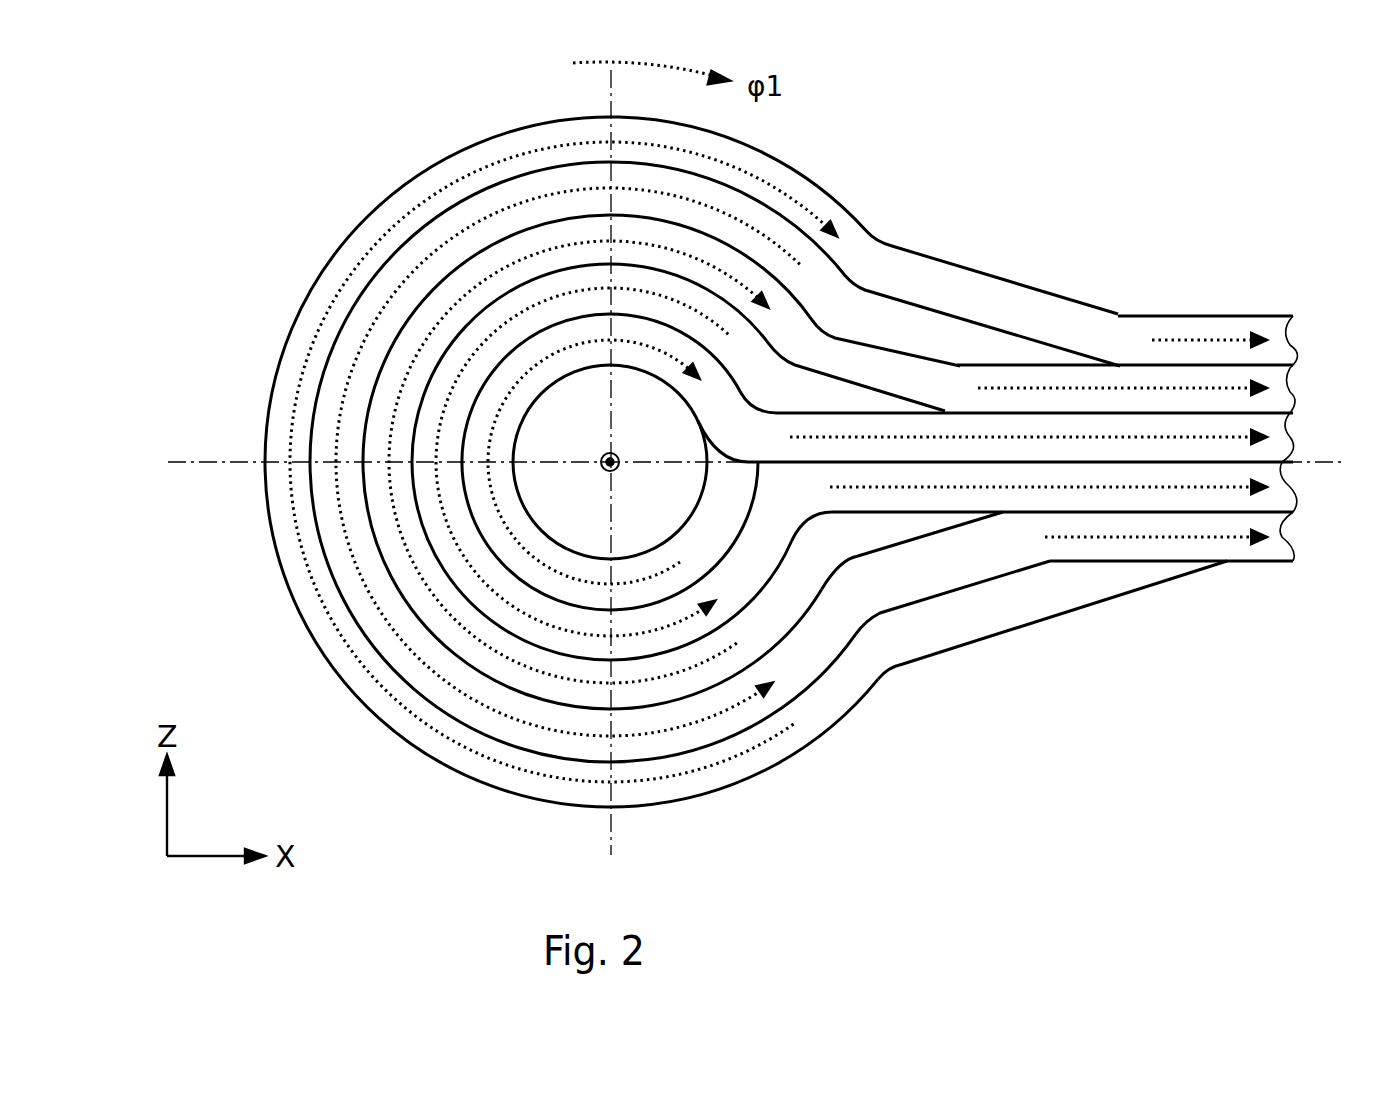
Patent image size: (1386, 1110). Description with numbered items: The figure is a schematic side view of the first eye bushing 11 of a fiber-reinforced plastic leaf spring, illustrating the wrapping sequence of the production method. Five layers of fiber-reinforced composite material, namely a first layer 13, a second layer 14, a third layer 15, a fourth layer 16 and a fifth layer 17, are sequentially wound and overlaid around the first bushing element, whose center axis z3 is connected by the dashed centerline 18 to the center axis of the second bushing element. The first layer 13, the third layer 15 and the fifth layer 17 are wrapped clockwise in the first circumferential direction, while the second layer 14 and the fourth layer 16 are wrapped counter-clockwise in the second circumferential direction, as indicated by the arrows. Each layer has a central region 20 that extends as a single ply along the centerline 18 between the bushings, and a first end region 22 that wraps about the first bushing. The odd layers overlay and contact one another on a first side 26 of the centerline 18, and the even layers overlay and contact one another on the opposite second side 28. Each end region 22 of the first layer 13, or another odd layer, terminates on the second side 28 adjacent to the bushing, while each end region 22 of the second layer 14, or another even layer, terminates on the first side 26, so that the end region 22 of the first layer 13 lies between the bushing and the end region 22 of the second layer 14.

The first eye bushing 11 is at (1228, 143).
The first layer 13 is at (555, 590).
The second layer 14 is at (468, 583).
The third layer 15 is at (385, 525).
The fourth layer 16 is at (342, 362).
The fifth layer 17 is at (402, 207).
The centerline 18 is at (1325, 463).
The central region 20 is at (1203, 387).
The first end region 22 is at (782, 395).
The first side 26 is at (1166, 259).
The second side 28 is at (1098, 712).
The center axis z3 is at (616, 457).